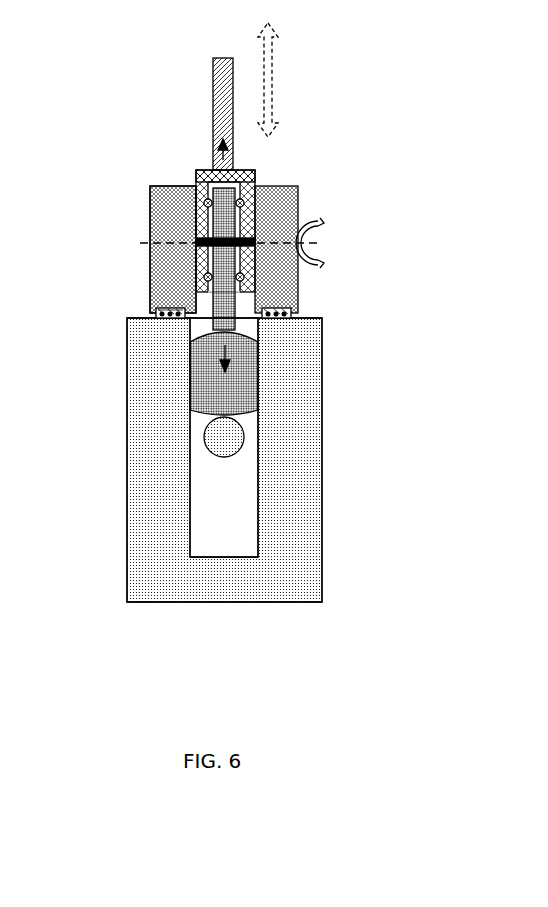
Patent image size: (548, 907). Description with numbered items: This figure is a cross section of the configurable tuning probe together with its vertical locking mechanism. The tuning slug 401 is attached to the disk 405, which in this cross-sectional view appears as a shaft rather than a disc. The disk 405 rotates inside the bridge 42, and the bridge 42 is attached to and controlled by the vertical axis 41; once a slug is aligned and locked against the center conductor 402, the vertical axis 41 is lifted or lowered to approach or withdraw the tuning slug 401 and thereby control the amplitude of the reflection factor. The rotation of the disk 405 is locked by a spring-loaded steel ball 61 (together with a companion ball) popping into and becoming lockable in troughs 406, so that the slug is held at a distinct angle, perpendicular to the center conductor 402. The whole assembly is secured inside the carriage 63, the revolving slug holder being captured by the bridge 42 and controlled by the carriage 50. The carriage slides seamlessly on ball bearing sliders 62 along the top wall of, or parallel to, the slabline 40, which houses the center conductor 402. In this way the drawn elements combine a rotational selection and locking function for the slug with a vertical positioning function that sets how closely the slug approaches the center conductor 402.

The slabline 40 is at (322, 412).
The tuning slug 401 is at (190, 357).
The center conductor 402 is at (204, 437).
The disk 405 is at (198, 300).
The troughs 406 is at (197, 176).
The vertical axis 41 is at (213, 82).
The bridge 42 is at (255, 178).
The carriage 50 is at (298, 223).
The spring-loaded steel ball 61 is at (244, 205).
The ball bearing sliders 62 is at (157, 313).
The carriage 63 is at (150, 243).